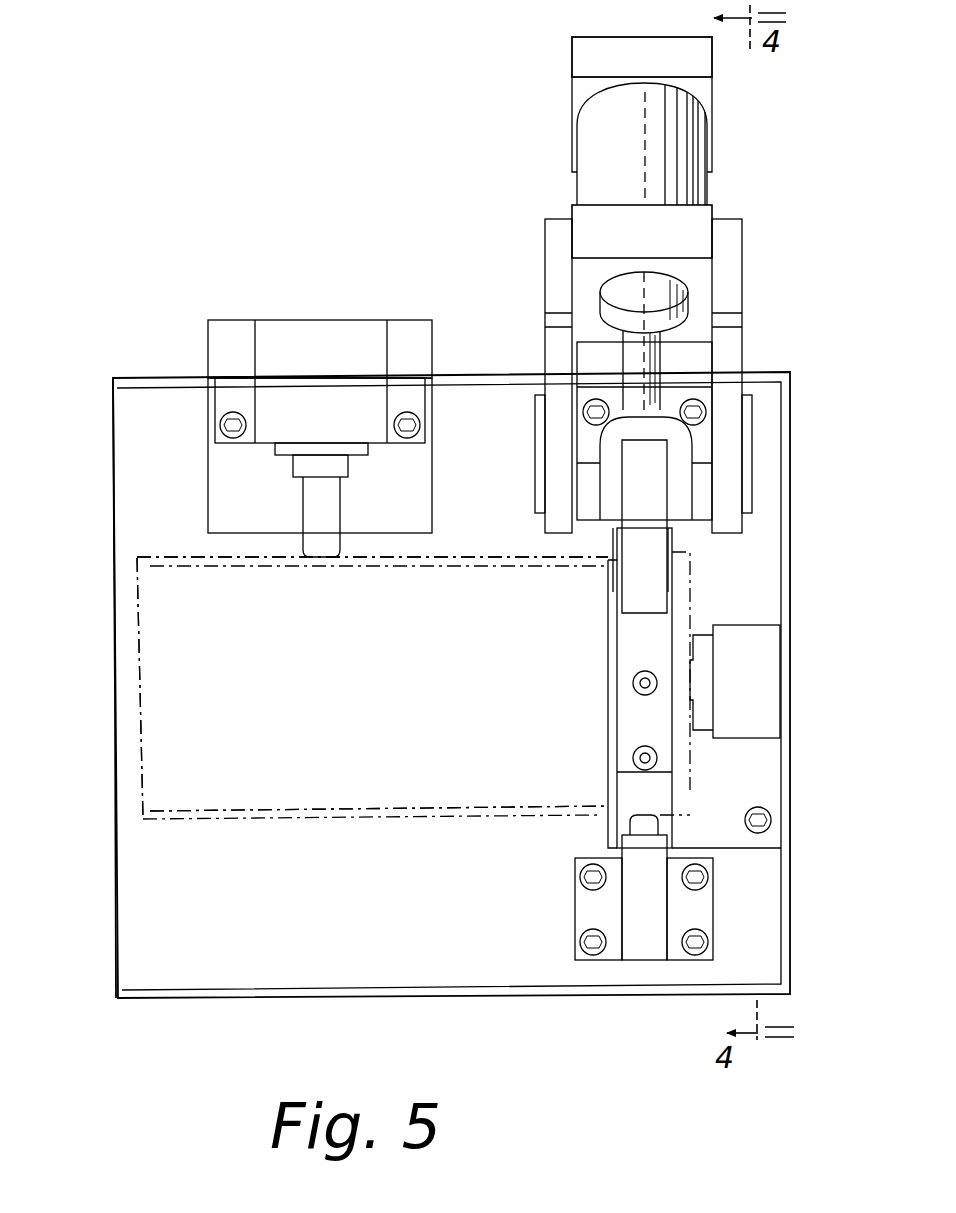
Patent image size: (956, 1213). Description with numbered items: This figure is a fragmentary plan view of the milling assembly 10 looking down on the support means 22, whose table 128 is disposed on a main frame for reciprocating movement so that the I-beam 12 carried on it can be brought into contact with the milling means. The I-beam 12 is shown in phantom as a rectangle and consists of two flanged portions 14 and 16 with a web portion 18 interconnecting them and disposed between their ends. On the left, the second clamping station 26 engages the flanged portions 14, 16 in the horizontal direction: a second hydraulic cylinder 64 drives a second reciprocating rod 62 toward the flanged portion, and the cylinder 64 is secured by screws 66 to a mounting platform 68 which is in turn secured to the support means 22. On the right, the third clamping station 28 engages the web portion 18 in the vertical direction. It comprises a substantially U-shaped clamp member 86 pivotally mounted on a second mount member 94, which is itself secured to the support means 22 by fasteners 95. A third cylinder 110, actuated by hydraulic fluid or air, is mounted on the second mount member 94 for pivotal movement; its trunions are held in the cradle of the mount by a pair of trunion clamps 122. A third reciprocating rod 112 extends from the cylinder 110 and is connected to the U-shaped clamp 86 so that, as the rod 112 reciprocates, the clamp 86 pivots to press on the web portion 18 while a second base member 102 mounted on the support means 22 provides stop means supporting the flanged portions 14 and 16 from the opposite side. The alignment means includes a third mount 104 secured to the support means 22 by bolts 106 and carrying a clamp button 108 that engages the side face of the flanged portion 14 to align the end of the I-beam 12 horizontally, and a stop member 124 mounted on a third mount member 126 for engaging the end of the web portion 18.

The milling assembly 10 is at (150, 368).
The I-beam 12 is at (169, 553).
The flanged portion 14 is at (330, 815).
The flanged portion 16 is at (497, 530).
The web portion 18 is at (160, 667).
The support means 22 is at (338, 1004).
The second clamping station 26 is at (357, 442).
The third clamping station 28 is at (648, 539).
The second reciprocating rod 62 is at (320, 548).
The second hydraulic cylinder 64 is at (305, 325).
The screws 66 is at (233, 438).
The mounting platform 68 is at (418, 502).
The U-shaped clamp member 86 is at (621, 536).
The second mount member 94 is at (728, 363).
The fasteners 95 is at (583, 413).
The second base member 102 is at (688, 790).
The third mount 104 is at (645, 950).
The bolts 106 is at (585, 935).
The clamp button 108 is at (635, 823).
The third cylinder 110 is at (662, 100).
The third reciprocating rod 112 is at (652, 357).
The trunion clamps 122 is at (553, 230).
The stop member 124 is at (688, 667).
The third mount member 126 is at (737, 630).
The table 128 is at (143, 970).